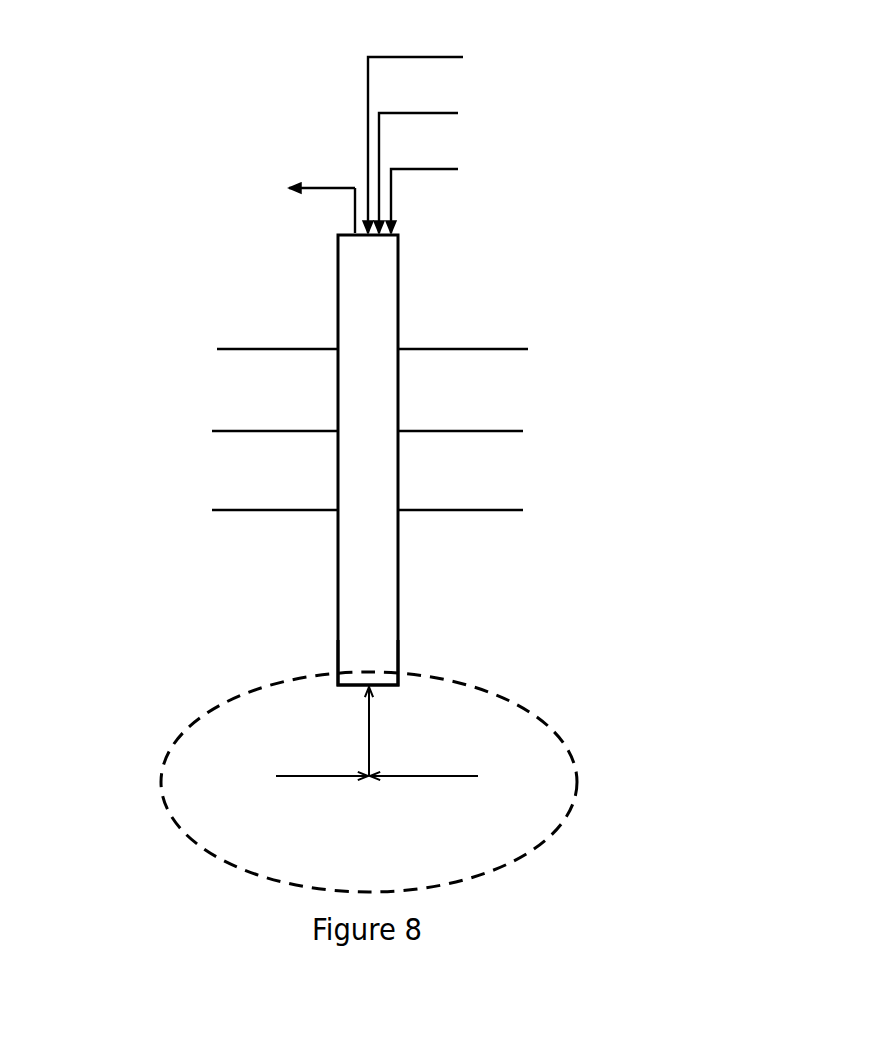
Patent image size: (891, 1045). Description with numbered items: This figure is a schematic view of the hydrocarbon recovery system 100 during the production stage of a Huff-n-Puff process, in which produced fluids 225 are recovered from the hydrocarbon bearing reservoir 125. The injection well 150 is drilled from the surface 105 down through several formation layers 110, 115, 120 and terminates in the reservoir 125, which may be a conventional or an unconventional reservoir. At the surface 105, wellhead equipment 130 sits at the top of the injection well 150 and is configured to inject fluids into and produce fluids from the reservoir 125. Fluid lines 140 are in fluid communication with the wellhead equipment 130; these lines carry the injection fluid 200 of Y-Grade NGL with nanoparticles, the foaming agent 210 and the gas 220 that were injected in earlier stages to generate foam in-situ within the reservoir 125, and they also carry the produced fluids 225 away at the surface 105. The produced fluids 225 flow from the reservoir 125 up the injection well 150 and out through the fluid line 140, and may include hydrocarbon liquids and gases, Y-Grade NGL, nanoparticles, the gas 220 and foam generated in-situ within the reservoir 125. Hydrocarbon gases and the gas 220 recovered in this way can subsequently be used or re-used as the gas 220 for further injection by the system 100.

The hydrocarbon recovery system 100 is at (258, 72).
The surface 105 is at (256, 333).
The formation layer 110 is at (489, 397).
The formation layer 115 is at (489, 479).
The formation layer 120 is at (493, 581).
The hydrocarbon bearing reservoir 125 is at (517, 690).
The wellhead equipment 130 is at (330, 291).
The fluid line 140 is at (381, 160).
The injection well 150 is at (332, 628).
The injection fluid 200 is at (616, 140).
The foaming agent 210 is at (536, 170).
The gas 220 is at (480, 196).
The produced fluids 225 is at (322, 822).